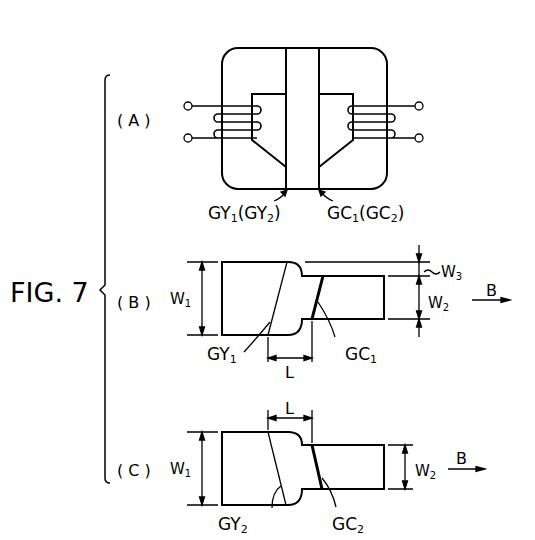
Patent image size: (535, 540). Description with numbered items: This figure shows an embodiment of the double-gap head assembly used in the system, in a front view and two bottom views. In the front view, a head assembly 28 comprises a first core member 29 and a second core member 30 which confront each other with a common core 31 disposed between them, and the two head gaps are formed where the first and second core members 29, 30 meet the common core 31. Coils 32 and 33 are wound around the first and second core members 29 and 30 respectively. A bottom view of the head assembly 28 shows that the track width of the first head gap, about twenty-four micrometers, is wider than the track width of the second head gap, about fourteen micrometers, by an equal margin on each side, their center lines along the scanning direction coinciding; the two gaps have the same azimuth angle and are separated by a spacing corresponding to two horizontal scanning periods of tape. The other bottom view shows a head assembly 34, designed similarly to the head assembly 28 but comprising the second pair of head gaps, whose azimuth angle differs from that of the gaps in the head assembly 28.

The head assembly 28 is at (388, 61).
The first core member 29 is at (237, 48).
The second core member 30 is at (347, 50).
The common core 31 is at (297, 50).
The coil 32 is at (204, 101).
The coil 33 is at (407, 101).
The head assembly 34 is at (236, 431).